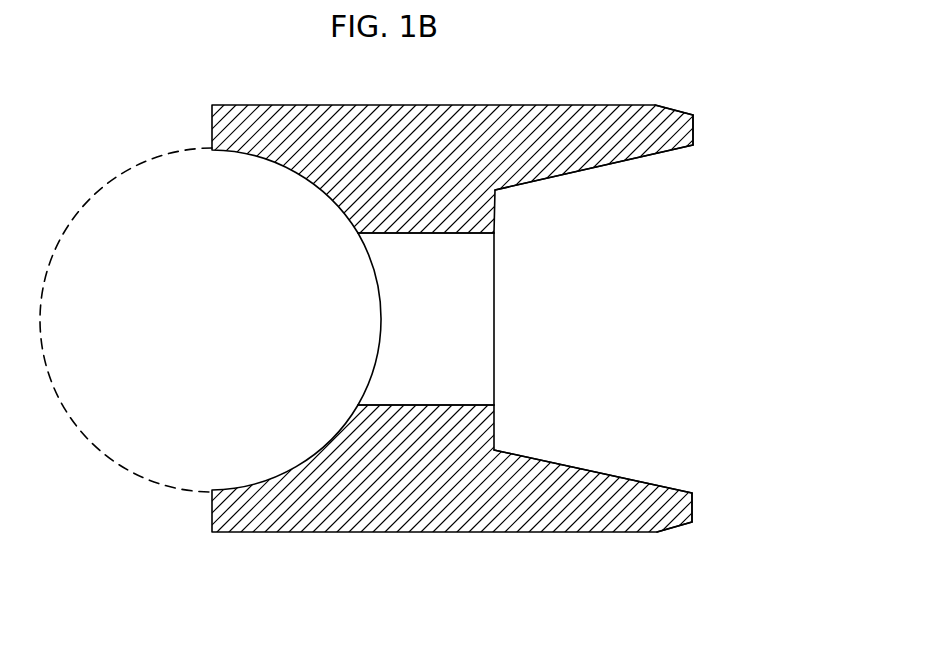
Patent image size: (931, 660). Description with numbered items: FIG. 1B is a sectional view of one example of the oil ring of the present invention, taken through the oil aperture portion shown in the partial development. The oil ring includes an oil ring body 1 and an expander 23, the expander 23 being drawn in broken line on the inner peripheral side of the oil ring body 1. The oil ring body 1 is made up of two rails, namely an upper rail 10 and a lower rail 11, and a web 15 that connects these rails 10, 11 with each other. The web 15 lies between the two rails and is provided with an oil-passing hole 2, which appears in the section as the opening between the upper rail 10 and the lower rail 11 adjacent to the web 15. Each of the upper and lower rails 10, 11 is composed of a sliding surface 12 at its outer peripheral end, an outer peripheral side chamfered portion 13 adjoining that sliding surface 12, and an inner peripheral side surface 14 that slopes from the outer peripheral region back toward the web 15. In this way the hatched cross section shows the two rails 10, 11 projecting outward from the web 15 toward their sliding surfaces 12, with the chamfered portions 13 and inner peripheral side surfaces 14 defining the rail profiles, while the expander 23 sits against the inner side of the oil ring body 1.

The oil ring body 1 is at (462, 150).
The oil-passing hole 2 is at (485, 332).
The upper rail 10 is at (577, 133).
The lower rail 11 is at (543, 502).
The sliding surface 12 is at (695, 128).
The outer peripheral side chamfered portion 13 is at (675, 108).
The inner peripheral side surface 14 is at (600, 168).
The web 15 is at (460, 205).
The expander 23 is at (150, 402).